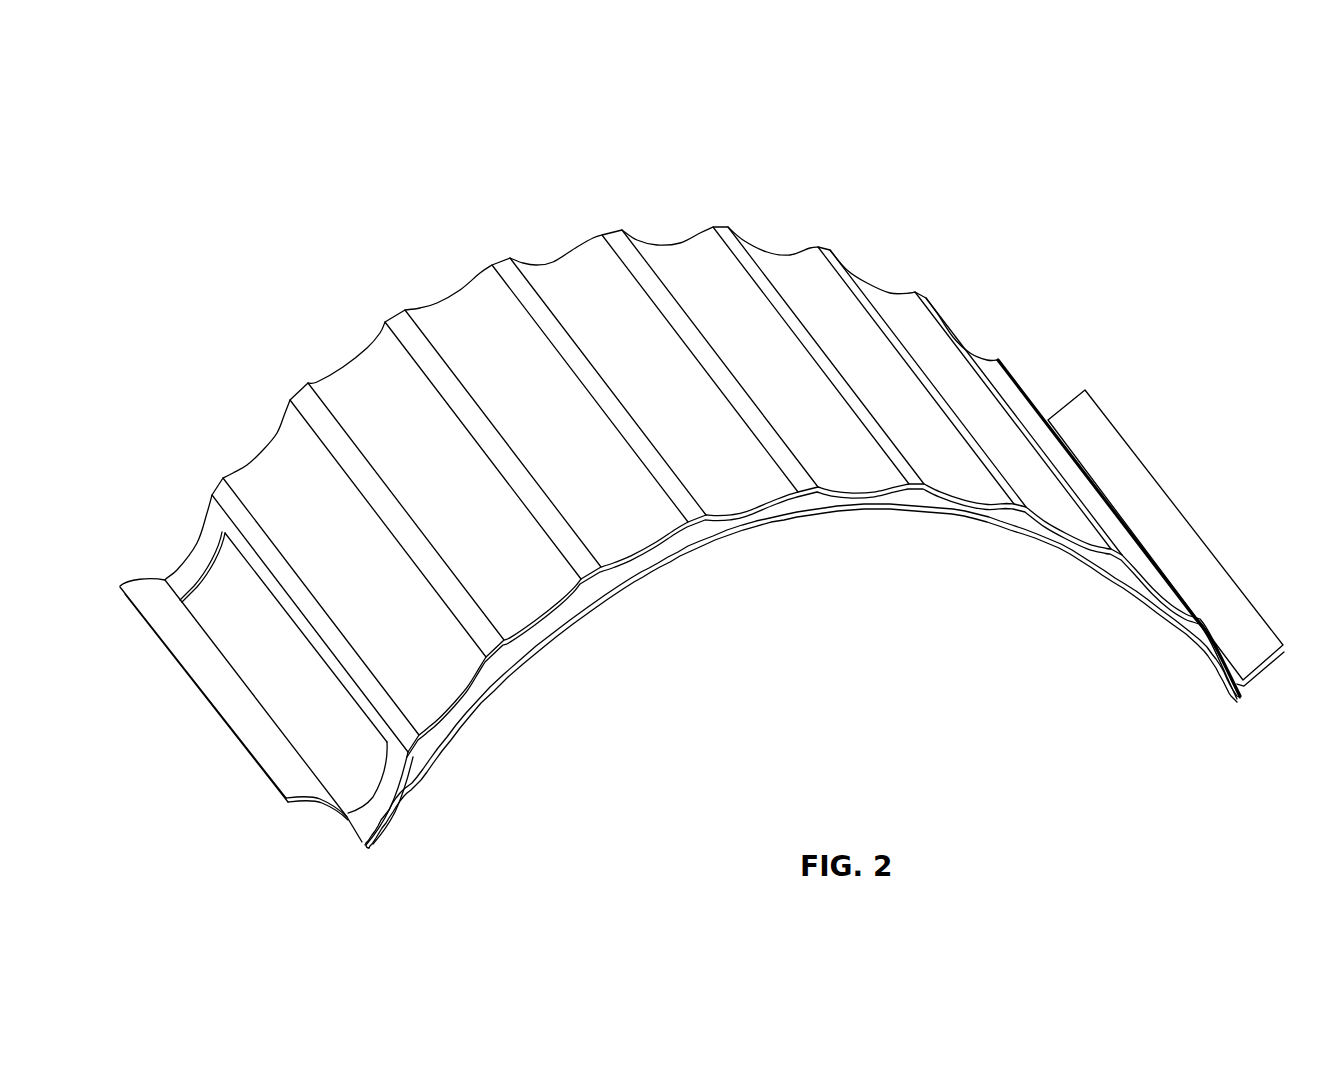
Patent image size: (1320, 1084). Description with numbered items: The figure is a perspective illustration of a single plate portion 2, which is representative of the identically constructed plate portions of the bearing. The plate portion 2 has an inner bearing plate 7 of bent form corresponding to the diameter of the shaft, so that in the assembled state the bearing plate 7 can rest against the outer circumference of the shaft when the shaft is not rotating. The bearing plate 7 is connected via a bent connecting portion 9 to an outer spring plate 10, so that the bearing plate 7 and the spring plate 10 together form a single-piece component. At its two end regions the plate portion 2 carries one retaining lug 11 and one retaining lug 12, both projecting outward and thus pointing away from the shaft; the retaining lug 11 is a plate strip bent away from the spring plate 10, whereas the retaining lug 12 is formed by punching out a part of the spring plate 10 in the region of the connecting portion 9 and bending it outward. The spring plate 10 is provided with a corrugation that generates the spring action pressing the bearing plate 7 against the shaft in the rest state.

The plate portion 2 is at (955, 236).
The inner bearing plate 7 is at (743, 535).
The bent connecting portion 9 is at (367, 848).
The outer spring plate 10 is at (720, 226).
The retaining lug 11 is at (1143, 470).
The retaining lug 12 is at (189, 680).